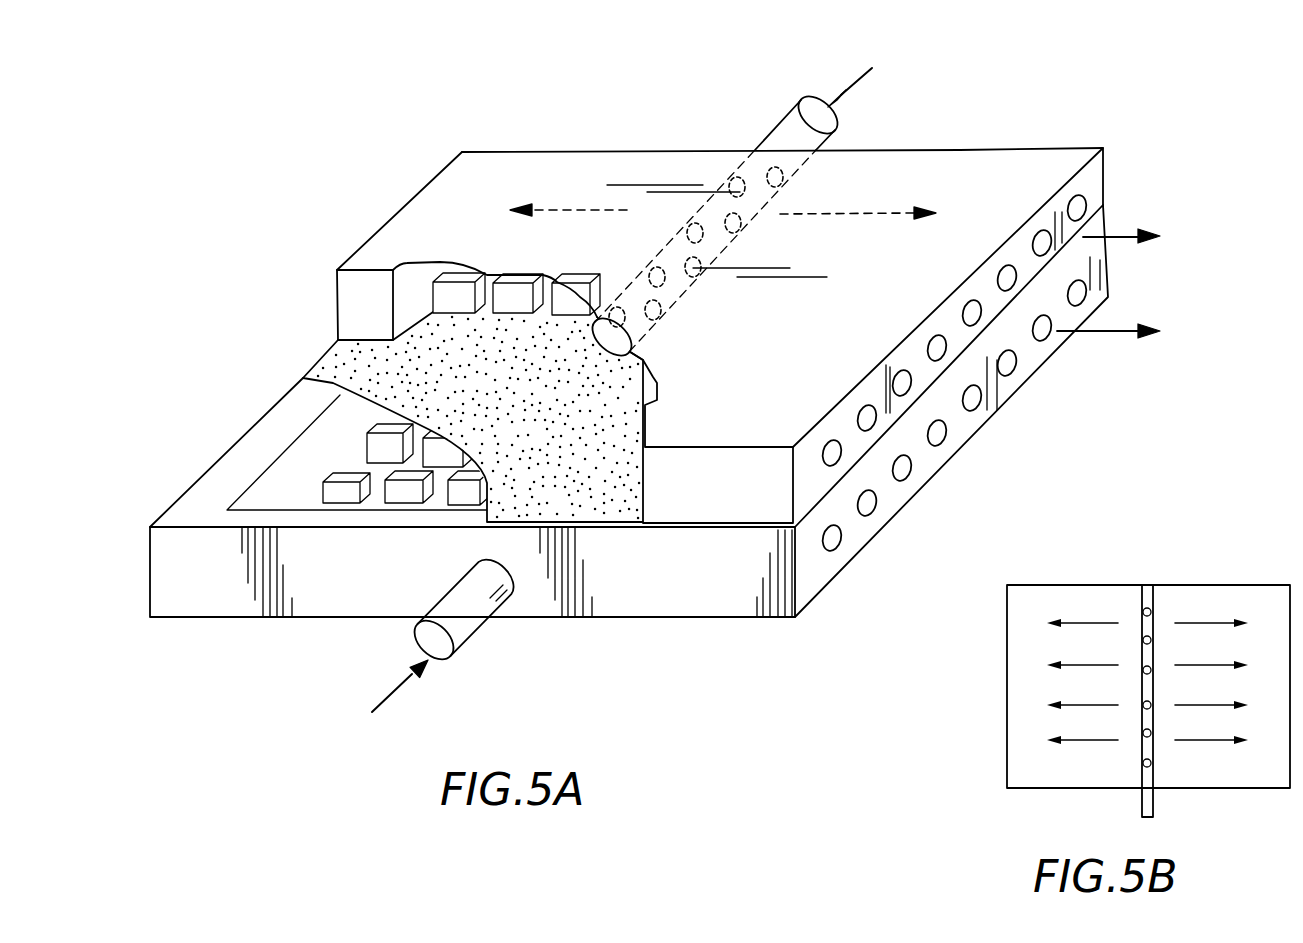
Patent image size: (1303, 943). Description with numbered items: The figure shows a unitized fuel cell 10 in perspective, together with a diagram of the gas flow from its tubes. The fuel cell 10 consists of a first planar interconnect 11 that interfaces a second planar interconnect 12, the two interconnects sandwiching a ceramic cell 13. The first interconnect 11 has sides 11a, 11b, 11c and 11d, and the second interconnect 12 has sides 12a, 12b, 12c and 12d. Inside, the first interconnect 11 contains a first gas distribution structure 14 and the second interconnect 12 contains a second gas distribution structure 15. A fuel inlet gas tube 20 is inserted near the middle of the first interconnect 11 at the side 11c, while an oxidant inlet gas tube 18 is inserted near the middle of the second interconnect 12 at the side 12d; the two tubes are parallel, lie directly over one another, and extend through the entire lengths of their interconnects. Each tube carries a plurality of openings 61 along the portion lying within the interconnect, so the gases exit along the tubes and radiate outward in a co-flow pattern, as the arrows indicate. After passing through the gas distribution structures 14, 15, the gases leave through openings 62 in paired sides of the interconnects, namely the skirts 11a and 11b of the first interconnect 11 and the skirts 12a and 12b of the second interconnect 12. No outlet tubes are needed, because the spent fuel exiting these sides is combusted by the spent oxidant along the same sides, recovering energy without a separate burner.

In FIG. 5A, the fuel cell 10 is at (1097, 88).
In FIG. 5A, the first planar interconnect 11 is at (162, 569).
In FIG. 5A, the side of first interconnect 11a is at (178, 498).
In FIG. 5A, the side of first interconnect 11b is at (967, 435).
In FIG. 5A, the side of first interconnect 11c is at (628, 605).
In FIG. 5A, the side of first interconnect 11d is at (1013, 135).
In FIG. 5A, the second planar interconnect 12 is at (578, 148).
In FIG. 5A, the side of second interconnect 12a is at (357, 250).
In FIG. 5A, the side of second interconnect 12b is at (948, 318).
In FIG. 5A, the side of second interconnect 12c is at (710, 510).
In FIG. 5A, the side of second interconnect 12d is at (913, 147).
In FIG. 5A, the ceramic cell 13 is at (327, 367).
In FIG. 5A, the first gas distribution structure 14 is at (338, 497).
In FIG. 5A, the second gas distribution structure 15 is at (463, 293).
In FIG. 5A, the oxidant inlet gas tube 18 is at (797, 107).
In FIG. 5A, the fuel inlet gas tube 20 is at (483, 633).
In FIG. 5B, the fuel inlet gas tube 20 is at (1153, 803).
In FIG. 5A, the openings 61 is at (788, 178).
In FIG. 5A, the openings 62 is at (1085, 203).